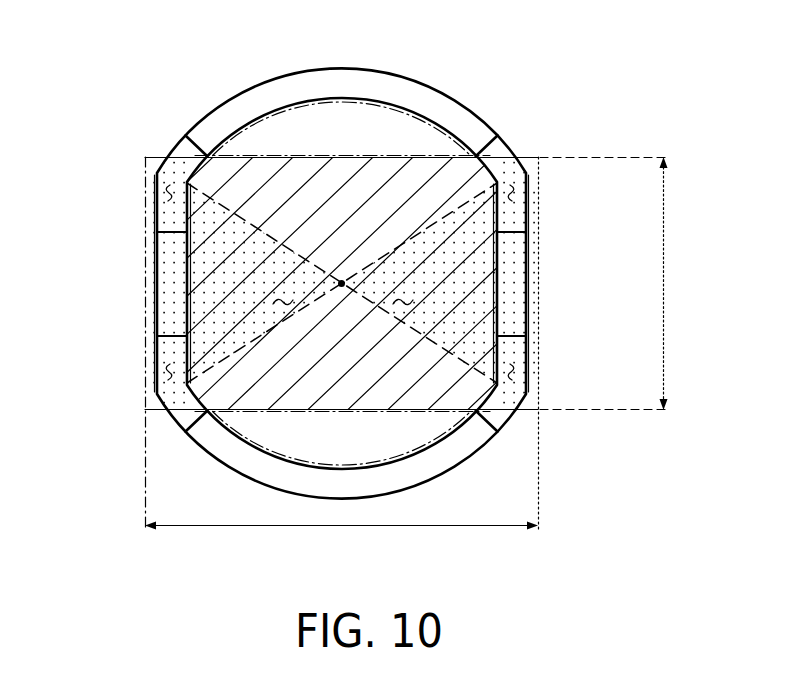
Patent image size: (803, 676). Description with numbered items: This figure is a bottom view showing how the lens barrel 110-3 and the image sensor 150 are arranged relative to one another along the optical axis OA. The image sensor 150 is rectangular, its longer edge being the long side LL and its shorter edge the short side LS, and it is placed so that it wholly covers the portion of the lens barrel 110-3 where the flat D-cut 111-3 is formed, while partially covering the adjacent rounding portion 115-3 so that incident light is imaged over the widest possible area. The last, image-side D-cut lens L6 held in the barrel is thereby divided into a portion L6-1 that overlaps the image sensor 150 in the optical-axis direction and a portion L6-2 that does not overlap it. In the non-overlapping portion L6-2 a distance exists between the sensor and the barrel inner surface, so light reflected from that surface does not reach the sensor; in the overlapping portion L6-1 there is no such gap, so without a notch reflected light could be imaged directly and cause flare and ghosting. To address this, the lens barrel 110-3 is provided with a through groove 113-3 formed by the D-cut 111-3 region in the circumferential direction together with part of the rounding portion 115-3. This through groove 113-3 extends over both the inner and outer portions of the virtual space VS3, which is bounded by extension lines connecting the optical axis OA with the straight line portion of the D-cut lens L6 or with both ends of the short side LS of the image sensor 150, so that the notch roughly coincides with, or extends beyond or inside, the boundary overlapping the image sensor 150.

The lens barrel 110-3 is at (463, 105).
The rounding portion 115-3 is at (282, 93).
The D-cut lens L6 is at (400, 127).
The overlapping portion of last lens L6-1 is at (253, 177).
The non-overlapping portion of last lens L6-2 is at (340, 128).
The D-cut 111-3 is at (157, 282).
The through groove 113-3 is at (168, 193).
The image sensor 150 is at (157, 390).
The virtual space VS3 is at (282, 303).
The optical axis OA is at (341, 301).
The short side LS is at (622, 283).
The long side LL is at (341, 543).